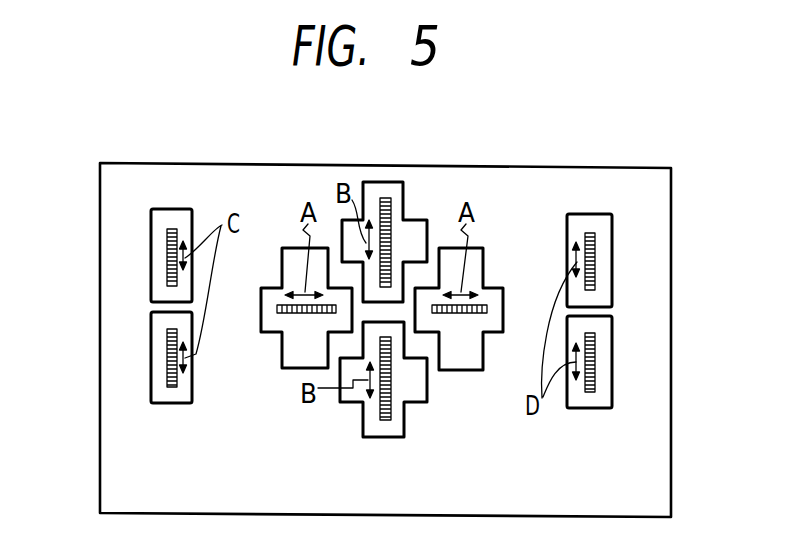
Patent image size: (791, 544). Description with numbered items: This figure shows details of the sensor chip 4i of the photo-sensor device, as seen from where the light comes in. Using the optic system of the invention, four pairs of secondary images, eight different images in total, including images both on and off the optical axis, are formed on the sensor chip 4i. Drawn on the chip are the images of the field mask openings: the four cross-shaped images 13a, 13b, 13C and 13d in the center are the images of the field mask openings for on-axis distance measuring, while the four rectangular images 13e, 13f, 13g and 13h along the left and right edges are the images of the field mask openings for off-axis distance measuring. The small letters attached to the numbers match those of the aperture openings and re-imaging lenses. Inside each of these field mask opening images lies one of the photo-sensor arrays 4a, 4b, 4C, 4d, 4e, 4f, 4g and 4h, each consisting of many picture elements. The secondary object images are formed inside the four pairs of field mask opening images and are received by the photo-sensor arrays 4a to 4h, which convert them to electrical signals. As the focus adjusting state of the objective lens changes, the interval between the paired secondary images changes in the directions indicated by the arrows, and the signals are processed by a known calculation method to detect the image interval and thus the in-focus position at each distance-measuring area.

The sensor chip 4i is at (627, 167).
The photo-sensor array 4a is at (455, 318).
The photo-sensor array 4b is at (300, 325).
The photo-sensor array 4C is at (390, 218).
The photo-sensor array 4d is at (389, 408).
The photo-sensor array 4e is at (167, 242).
The photo-sensor array 4f is at (167, 341).
The photo-sensor array 4g is at (593, 277).
The photo-sensor array 4h is at (592, 378).
The image of field mask opening for on-axis distance measuring 13a is at (481, 370).
The image of field mask opening for on-axis distance measuring 13b is at (261, 333).
The image of field mask opening for on-axis distance measuring 13C is at (376, 192).
The image of field mask opening for on-axis distance measuring 13d is at (375, 440).
The image of field mask opening for off-axis distance measuring 13e is at (151, 280).
The image of field mask opening for off-axis distance measuring 13f is at (151, 382).
The image of field mask opening for off-axis distance measuring 13g is at (612, 236).
The image of field mask opening for off-axis distance measuring 13h is at (612, 342).